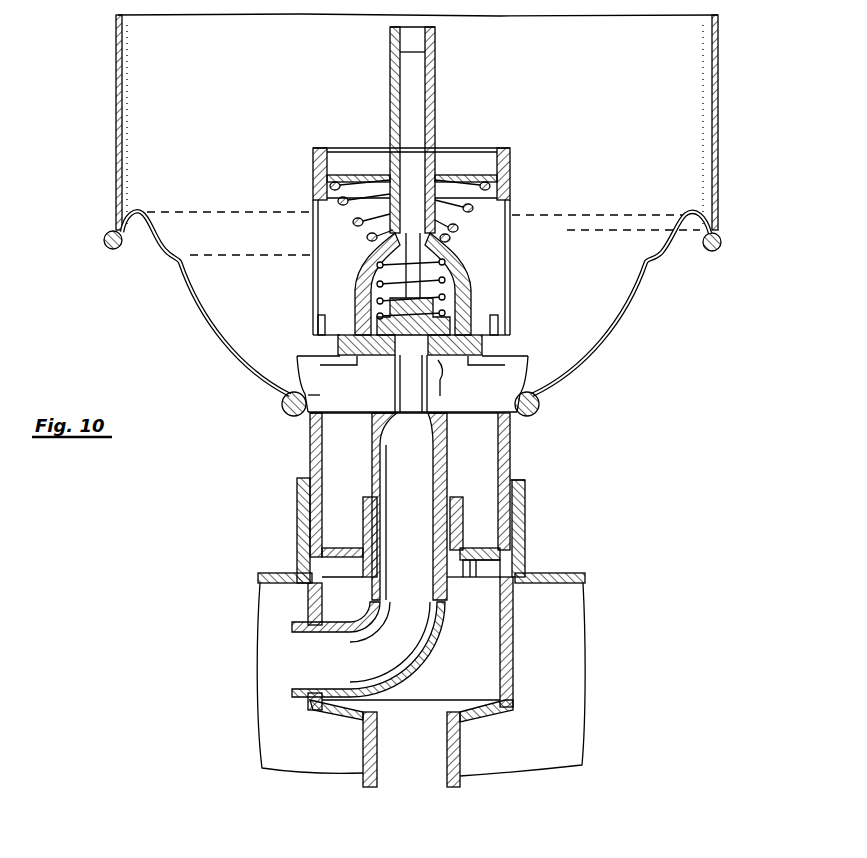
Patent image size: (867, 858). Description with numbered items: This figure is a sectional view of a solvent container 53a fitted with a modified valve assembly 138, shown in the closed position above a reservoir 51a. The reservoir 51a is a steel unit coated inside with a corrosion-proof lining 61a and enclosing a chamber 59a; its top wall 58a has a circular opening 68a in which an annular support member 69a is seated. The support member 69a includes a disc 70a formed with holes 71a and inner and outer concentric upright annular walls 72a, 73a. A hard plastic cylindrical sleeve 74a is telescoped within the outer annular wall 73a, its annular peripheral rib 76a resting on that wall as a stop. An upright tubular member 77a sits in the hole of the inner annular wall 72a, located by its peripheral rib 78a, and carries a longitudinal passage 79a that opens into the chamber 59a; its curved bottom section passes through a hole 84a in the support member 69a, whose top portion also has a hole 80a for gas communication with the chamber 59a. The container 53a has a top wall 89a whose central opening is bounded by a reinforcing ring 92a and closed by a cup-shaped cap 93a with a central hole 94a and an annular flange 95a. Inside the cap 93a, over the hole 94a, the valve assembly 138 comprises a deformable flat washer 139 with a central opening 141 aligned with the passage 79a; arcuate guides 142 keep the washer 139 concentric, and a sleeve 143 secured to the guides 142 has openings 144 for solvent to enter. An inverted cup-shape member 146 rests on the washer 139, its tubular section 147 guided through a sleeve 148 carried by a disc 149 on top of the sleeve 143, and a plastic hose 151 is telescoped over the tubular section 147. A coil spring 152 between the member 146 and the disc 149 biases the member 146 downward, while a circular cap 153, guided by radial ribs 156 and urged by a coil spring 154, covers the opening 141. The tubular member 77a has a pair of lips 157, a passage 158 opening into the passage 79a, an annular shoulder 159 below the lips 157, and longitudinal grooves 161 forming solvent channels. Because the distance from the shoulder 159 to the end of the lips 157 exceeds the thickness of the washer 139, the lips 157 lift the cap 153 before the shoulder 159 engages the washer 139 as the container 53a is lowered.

The plastic hose 151 is at (437, 33).
The tubular section 147 is at (436, 121).
The sleeve 148 is at (381, 175).
The disc 149 is at (467, 175).
The valve assembly 138 is at (522, 146).
The solvent container 53a is at (697, 115).
The coil spring 152 is at (326, 196).
The sleeve 143 is at (512, 228).
The coil spring 154 is at (358, 284).
The inverted cup-shape member 146 is at (464, 258).
The circular cap 153 is at (470, 300).
The radial ribs 156 is at (318, 305).
The openings 144 is at (318, 326).
The cup-shaped cap 93a is at (305, 356).
The arcuate guides 142 is at (495, 318).
The annular flange 95a is at (530, 388).
The top wall 89a is at (218, 344).
The central hole 94a is at (362, 368).
The reinforcing ring 92a is at (280, 396).
The central opening 141 is at (395, 353).
The flat washer 139 is at (470, 354).
The lips 157 is at (445, 376).
The annular shoulder 159 is at (380, 392).
The longitudinal grooves 161 is at (448, 424).
The passage 158 is at (395, 430).
The inner annular wall 72a is at (363, 514).
The peripheral rib 78a is at (452, 500).
The passage 79a is at (420, 538).
The holes 71a is at (478, 566).
The cylindrical sleeve 74a is at (511, 458).
The annular peripheral rib 76a is at (520, 492).
The outer annular wall 73a is at (525, 546).
The top wall 58a is at (275, 572).
The reservoir 51a is at (593, 575).
The circular opening 68a is at (313, 590).
The corrosion-proof lining 61a is at (585, 583).
The disc 70a is at (455, 582).
The tubular member 77a is at (438, 632).
The support member 69a is at (518, 633).
The hole 84a is at (320, 693).
The chamber 59a is at (575, 704).
The hole 80a is at (460, 736).